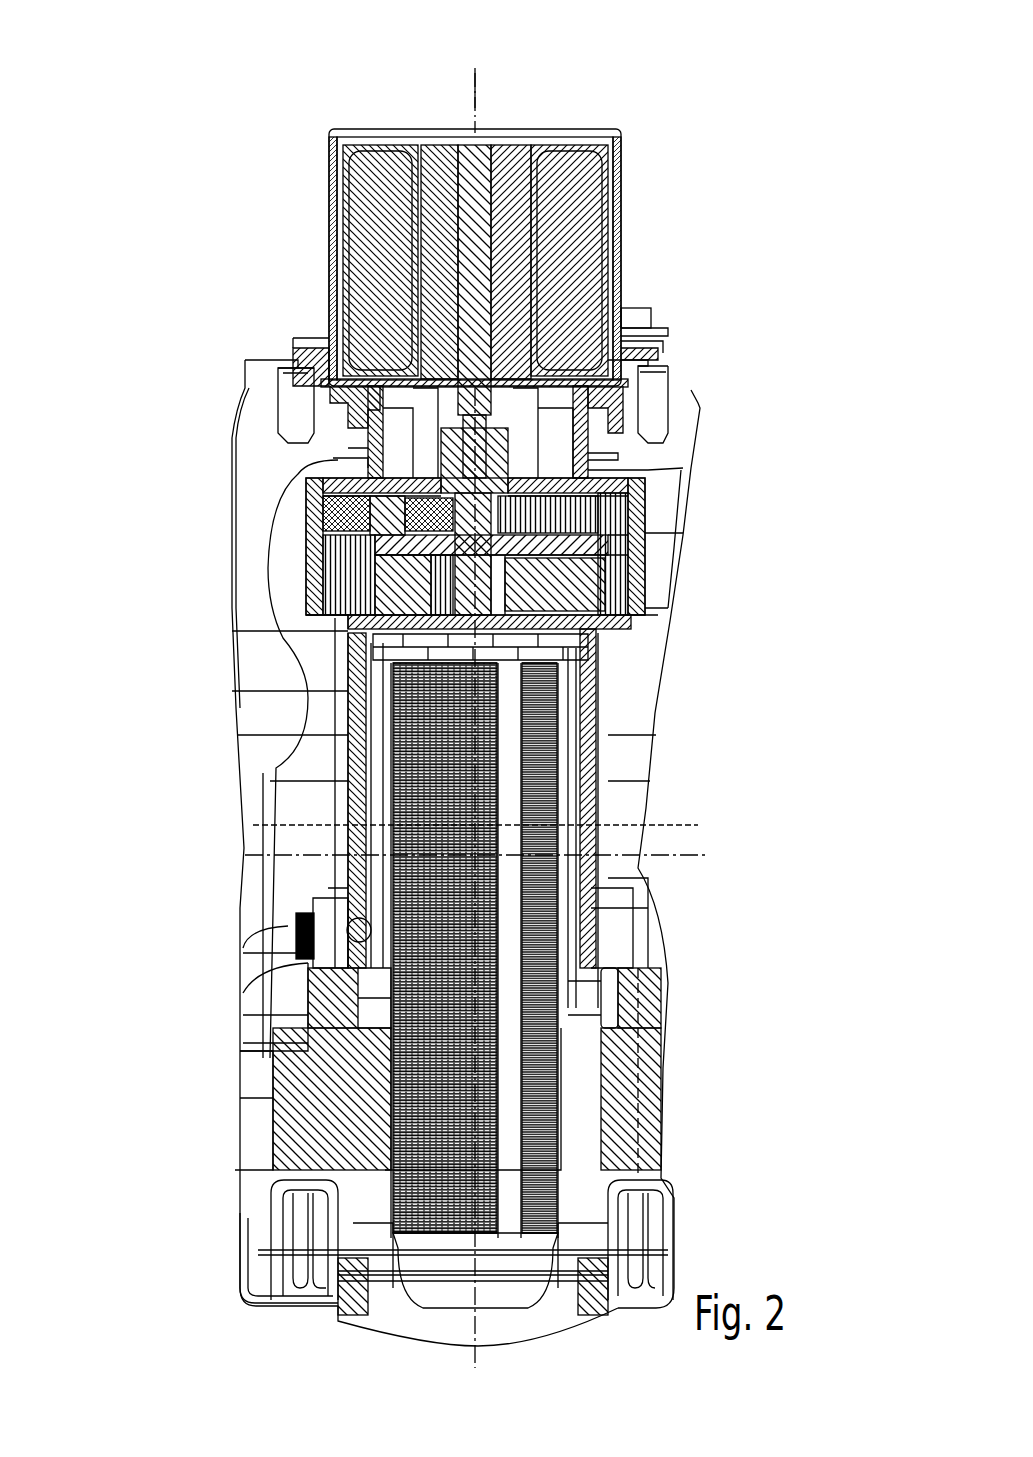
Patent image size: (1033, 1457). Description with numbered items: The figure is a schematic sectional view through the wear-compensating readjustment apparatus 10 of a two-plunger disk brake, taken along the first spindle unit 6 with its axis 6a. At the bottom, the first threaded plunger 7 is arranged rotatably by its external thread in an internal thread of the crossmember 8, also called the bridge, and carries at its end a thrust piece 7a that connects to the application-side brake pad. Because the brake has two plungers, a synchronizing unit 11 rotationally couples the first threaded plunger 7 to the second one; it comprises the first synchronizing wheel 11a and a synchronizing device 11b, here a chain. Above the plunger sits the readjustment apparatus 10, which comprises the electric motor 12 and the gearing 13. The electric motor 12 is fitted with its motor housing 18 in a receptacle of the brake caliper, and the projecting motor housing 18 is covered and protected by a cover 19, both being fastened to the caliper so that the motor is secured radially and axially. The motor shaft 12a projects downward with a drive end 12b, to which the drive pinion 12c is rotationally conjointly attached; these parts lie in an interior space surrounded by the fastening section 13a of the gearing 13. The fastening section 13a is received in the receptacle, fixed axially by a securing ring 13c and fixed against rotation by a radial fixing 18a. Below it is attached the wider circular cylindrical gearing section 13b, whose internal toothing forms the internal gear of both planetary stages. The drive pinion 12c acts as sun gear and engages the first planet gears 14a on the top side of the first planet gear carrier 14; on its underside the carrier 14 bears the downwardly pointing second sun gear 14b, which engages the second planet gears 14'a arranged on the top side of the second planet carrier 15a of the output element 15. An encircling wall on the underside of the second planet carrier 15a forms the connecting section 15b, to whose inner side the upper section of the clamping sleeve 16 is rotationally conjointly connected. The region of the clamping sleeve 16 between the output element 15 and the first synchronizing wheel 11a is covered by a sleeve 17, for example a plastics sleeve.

The first spindle unit 6 is at (467, 52).
The axis point 6a is at (470, 86).
The wear-compensating readjustment apparatus 10 is at (674, 90).
The cover 19 is at (323, 122).
The electric motor 12 is at (340, 176).
The motor shaft 12a is at (465, 246).
The drive end 12b is at (452, 488).
The drive pinion 12c is at (445, 463).
The motor housing 18 is at (290, 346).
The radial fixing 18a is at (318, 399).
The gearing 13 is at (646, 492).
The fastening section 13a is at (365, 431).
The gearing section 13b is at (637, 571).
The securing ring 13c is at (312, 418).
The first planet gear carrier 14 is at (380, 569).
The first planet gears 14a is at (322, 506).
The second planet gears 14'a is at (416, 565).
The second sun gear 14b is at (440, 606).
The output element 15 is at (608, 633).
The second planet carrier 15a is at (340, 629).
The connecting section 15b is at (345, 660).
The clamping sleeve 16 is at (607, 701).
The sleeve 17 is at (598, 766).
The synchronizing unit 11 is at (176, 939).
The first synchronizing wheel 11a is at (300, 962).
The synchronizing device 11b is at (298, 922).
The crossmember 8 is at (607, 1072).
The first threaded plunger 7 is at (385, 1131).
The thrust piece 7a is at (337, 1302).